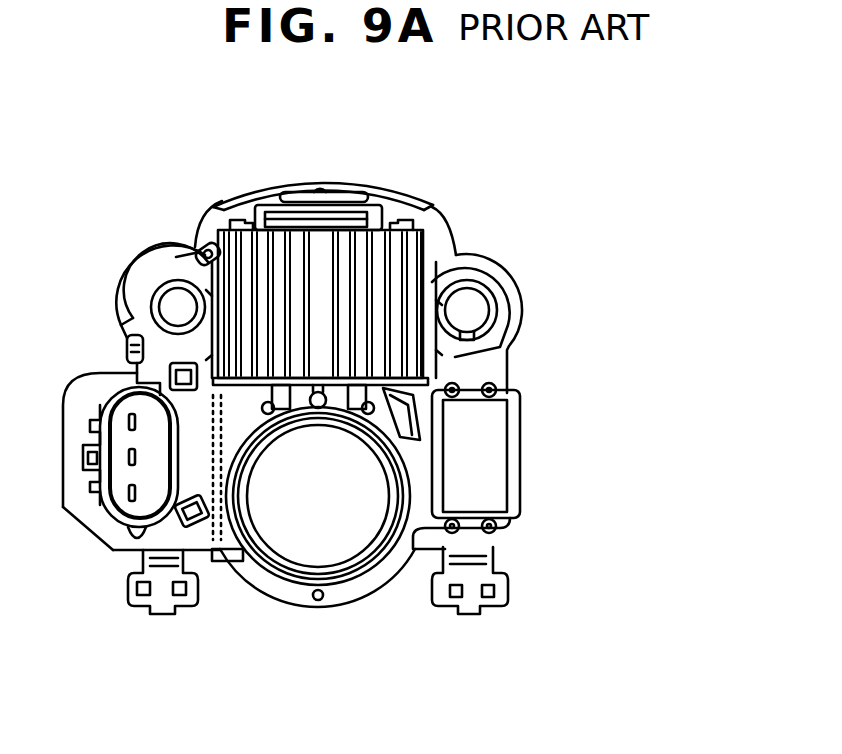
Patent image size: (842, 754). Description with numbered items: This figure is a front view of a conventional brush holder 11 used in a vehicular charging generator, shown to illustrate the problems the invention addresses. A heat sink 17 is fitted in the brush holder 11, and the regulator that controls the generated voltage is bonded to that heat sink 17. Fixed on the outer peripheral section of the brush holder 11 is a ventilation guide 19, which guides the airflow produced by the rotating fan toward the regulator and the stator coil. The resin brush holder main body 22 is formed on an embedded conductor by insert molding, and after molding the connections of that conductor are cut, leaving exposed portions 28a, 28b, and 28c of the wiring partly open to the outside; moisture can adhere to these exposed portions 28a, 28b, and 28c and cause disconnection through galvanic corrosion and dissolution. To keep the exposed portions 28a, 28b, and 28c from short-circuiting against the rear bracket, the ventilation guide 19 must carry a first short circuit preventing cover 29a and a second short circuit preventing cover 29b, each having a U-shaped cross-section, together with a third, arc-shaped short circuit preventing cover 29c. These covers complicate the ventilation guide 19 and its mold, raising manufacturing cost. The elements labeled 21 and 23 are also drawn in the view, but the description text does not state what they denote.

The brush holder 11 is at (523, 264).
The heat sink 17 is at (440, 238).
The ventilation guide 19 is at (348, 192).
The connector terminals 21 is at (132, 460).
The brush holder main body 22 is at (505, 370).
The connector housing 23 is at (98, 410).
The exposed portion 28a is at (125, 318).
The exposed portion 28b is at (185, 255).
The exposed portion 28c is at (250, 222).
The first short circuit preventing cover 29a is at (128, 346).
The second short circuit preventing cover 29b is at (196, 240).
The third short circuit preventing cover 29c is at (330, 185).